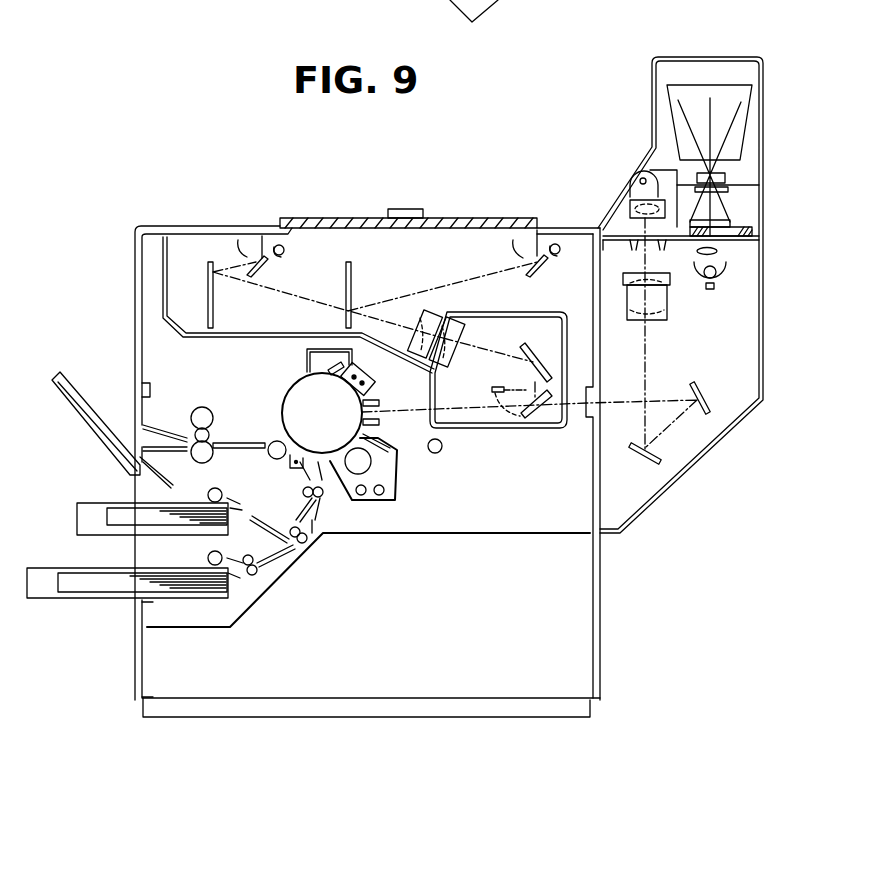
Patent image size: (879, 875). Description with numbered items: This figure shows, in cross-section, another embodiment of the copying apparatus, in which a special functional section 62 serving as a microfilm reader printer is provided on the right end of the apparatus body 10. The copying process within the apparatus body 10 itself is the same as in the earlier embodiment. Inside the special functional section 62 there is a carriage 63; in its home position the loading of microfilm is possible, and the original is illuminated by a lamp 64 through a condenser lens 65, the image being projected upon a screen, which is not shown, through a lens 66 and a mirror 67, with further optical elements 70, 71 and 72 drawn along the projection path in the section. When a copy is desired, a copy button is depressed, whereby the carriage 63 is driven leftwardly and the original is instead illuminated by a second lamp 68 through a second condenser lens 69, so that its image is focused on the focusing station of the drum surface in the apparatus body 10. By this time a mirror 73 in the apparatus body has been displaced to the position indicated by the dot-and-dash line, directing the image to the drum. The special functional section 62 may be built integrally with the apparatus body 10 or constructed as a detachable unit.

The copying apparatus main body 10 is at (426, 400).
The special functional section 62 is at (645, 141).
The carriage 63 is at (740, 227).
The lamp 64 is at (713, 289).
The condenser lens 65 is at (718, 252).
The lens 66 is at (726, 178).
The mirror 67 is at (703, 85).
The lamp 68 is at (632, 173).
The condenser lens 69 is at (630, 206).
The projection lens 70 is at (668, 318).
The mirror 71 is at (645, 463).
The mirror 72 is at (704, 390).
The mirror 73 is at (498, 390).